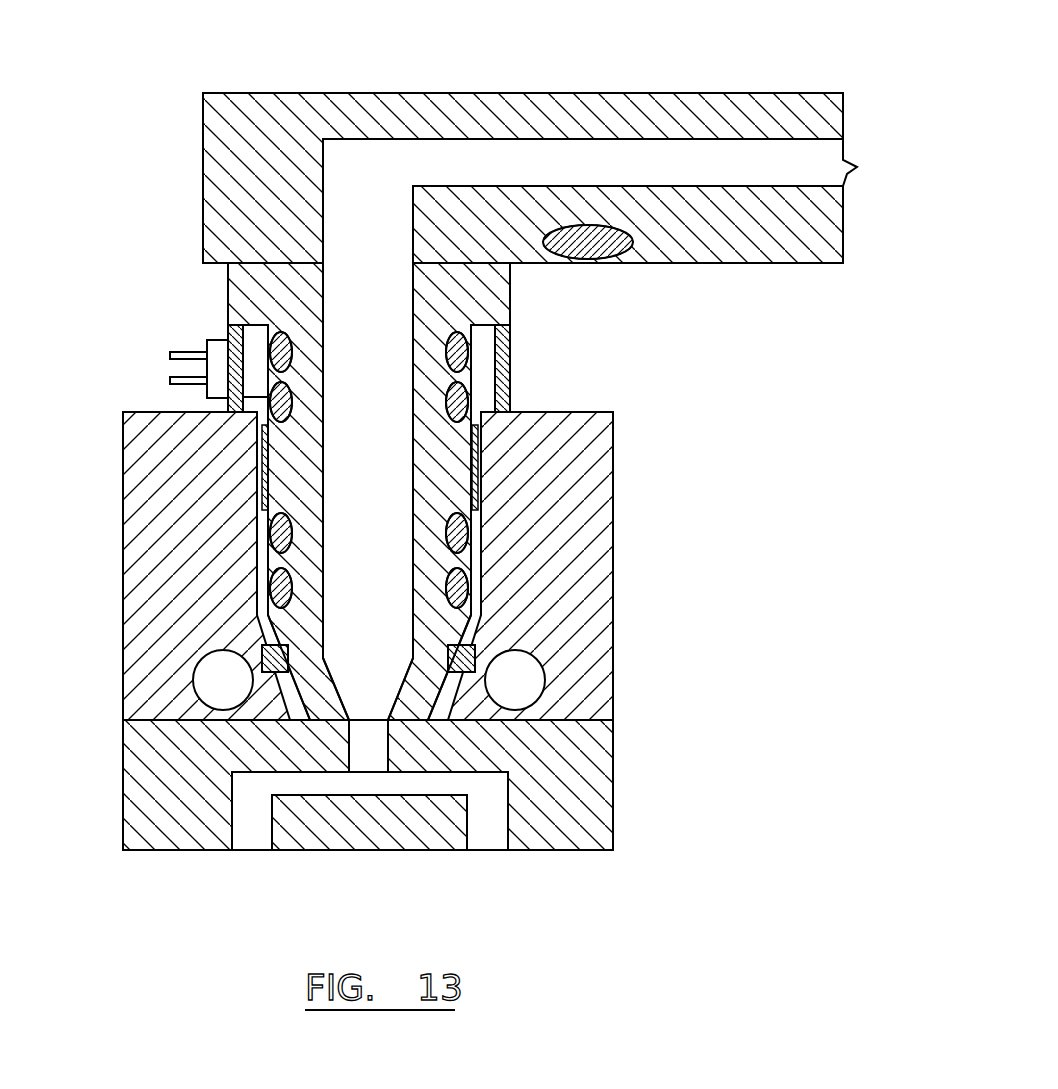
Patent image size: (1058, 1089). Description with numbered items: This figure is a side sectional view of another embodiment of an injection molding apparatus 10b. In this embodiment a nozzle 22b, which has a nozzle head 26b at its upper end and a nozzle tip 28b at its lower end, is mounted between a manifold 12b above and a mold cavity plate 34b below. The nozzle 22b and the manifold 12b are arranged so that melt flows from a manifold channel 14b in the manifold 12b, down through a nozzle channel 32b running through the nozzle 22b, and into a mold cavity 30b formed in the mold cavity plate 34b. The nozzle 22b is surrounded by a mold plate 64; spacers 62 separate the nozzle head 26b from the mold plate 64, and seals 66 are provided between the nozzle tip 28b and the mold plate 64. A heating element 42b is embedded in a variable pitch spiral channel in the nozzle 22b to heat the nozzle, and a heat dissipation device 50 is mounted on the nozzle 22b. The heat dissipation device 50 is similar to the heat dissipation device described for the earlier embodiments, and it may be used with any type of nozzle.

The injection molding apparatus 10b is at (768, 723).
The manifold 12b is at (515, 92).
The manifold channel 14b is at (617, 177).
The nozzle 22b is at (482, 578).
The nozzle head 26b is at (483, 292).
The nozzle tip 28b is at (290, 712).
The mold cavity 30b is at (492, 812).
The nozzle channel 32b is at (388, 479).
The mold cavity plate 34b is at (572, 752).
The heating element 42b is at (240, 417).
The heat dissipation device 50 is at (262, 473).
The spacers 62 is at (510, 355).
The mold plate 64 is at (575, 617).
The seals 66 is at (260, 655).